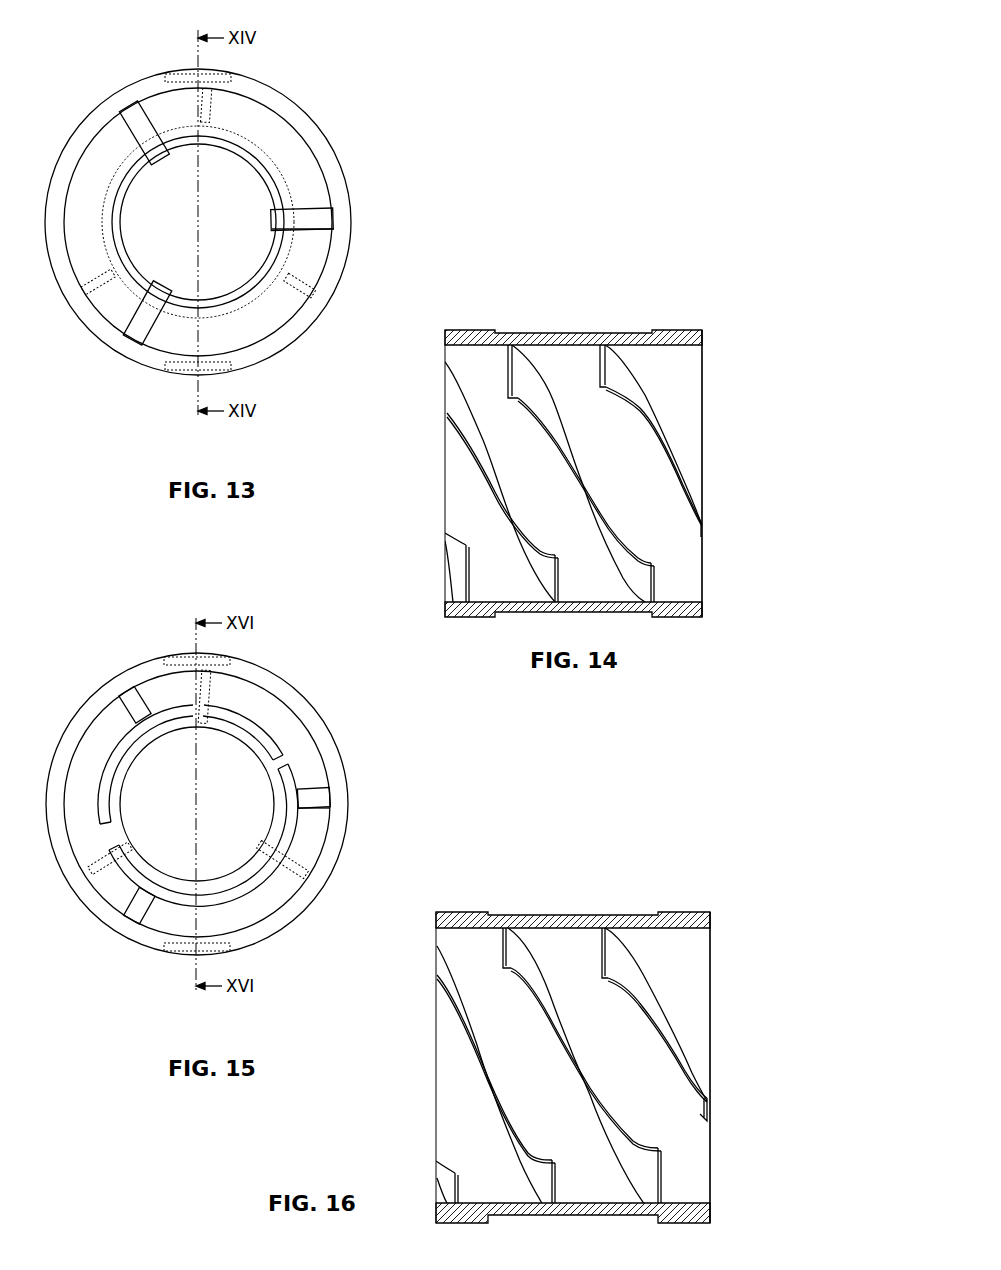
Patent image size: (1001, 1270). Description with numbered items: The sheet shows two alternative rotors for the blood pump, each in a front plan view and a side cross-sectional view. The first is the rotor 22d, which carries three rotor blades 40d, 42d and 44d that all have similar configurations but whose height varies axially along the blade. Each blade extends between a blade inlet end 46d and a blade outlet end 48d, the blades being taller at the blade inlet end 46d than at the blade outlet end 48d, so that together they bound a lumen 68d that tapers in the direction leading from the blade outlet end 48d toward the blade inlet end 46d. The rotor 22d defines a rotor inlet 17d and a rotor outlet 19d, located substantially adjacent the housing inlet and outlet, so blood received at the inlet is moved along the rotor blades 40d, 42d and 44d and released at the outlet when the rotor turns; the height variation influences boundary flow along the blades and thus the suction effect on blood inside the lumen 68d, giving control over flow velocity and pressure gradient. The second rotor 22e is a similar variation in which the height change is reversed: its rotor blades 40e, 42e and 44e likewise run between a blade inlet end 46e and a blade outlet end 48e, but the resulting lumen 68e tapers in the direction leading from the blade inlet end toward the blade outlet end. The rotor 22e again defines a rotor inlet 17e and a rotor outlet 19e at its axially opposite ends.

In FIG. 13, the rotor 22d is at (358, 68).
In FIG. 14, the rotor 22d is at (686, 296).
In FIG. 13, the rotor blade 40d is at (127, 118).
In FIG. 14, the rotor blade 40d is at (581, 418).
In FIG. 13, the rotor blade 42d is at (315, 208).
In FIG. 14, the rotor blade 42d is at (452, 387).
In FIG. 13, the rotor blade 44d is at (152, 343).
In FIG. 14, the rotor blade 44d is at (625, 376).
In FIG. 13, the blade inlet end 46d is at (328, 229).
In FIG. 14, the blade inlet end 46d is at (447, 413).
In FIG. 13, the blade outlet end 48d is at (318, 289).
In FIG. 14, the blade outlet end 48d is at (703, 524).
In FIG. 13, the lumen 68d is at (263, 182).
In FIG. 14, the lumen 68d is at (568, 468).
In FIG. 14, the rotor inlet 17d is at (445, 333).
In FIG. 14, the rotor outlet 19d is at (703, 336).
In FIG. 15, the rotor 22e is at (298, 650).
In FIG. 16, the rotor 22e is at (688, 877).
In FIG. 15, the rotor blade 40e is at (127, 697).
In FIG. 16, the rotor blade 40e is at (575, 1010).
In FIG. 15, the rotor blade 42e is at (312, 773).
In FIG. 16, the rotor blade 42e is at (442, 968).
In FIG. 15, the rotor blade 44e is at (153, 923).
In FIG. 16, the rotor blade 44e is at (623, 955).
In FIG. 15, the blade inlet end 46e is at (326, 803).
In FIG. 16, the blade inlet end 46e is at (455, 1192).
In FIG. 15, the blade outlet end 48e is at (293, 873).
In FIG. 16, the blade outlet end 48e is at (711, 1112).
In FIG. 15, the lumen 68e is at (263, 767).
In FIG. 16, the lumen 68e is at (555, 1027).
In FIG. 16, the rotor inlet 17e is at (436, 916).
In FIG. 16, the rotor outlet 19e is at (710, 918).